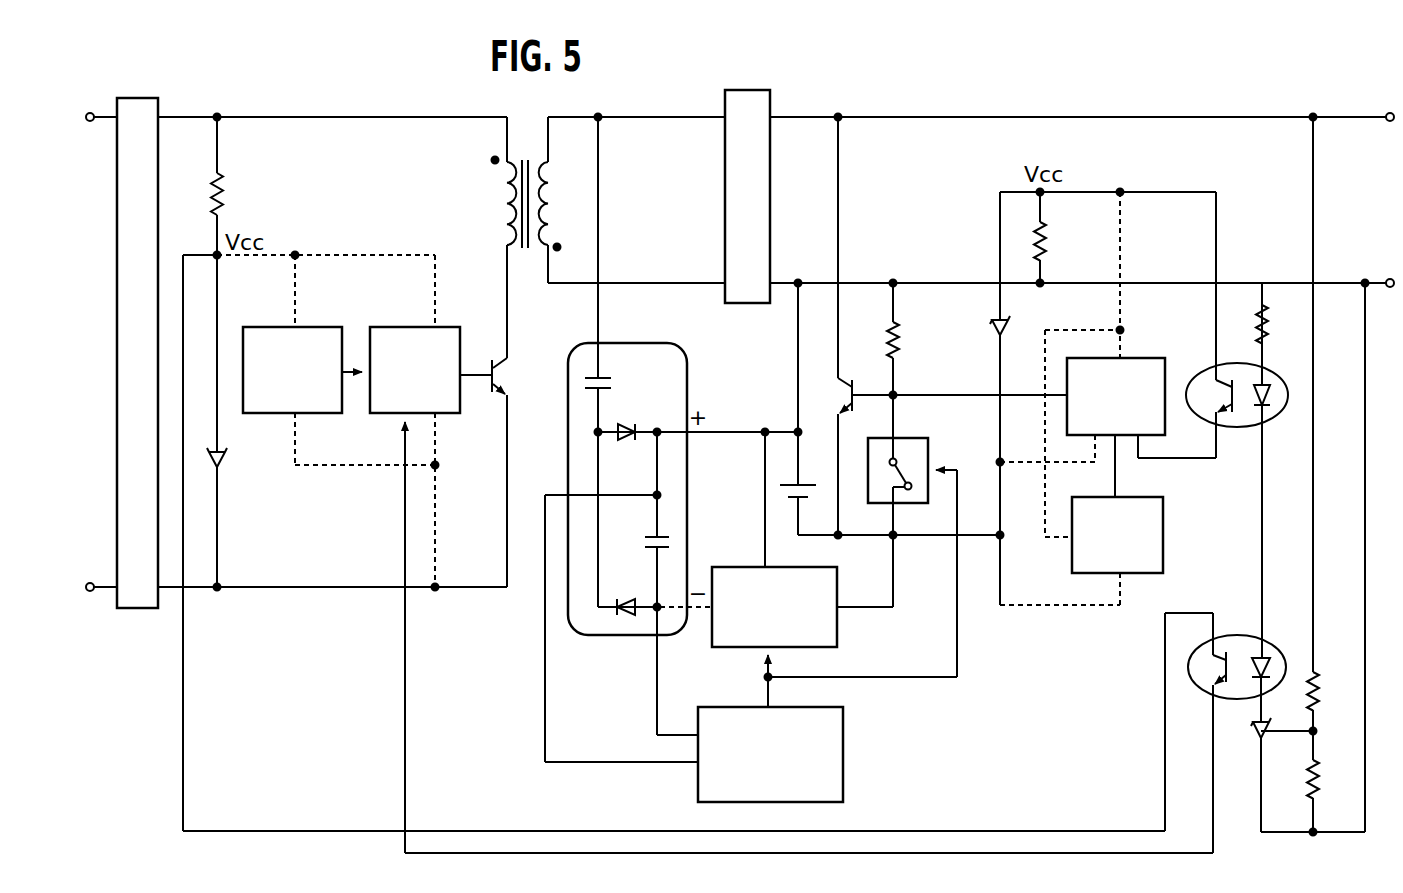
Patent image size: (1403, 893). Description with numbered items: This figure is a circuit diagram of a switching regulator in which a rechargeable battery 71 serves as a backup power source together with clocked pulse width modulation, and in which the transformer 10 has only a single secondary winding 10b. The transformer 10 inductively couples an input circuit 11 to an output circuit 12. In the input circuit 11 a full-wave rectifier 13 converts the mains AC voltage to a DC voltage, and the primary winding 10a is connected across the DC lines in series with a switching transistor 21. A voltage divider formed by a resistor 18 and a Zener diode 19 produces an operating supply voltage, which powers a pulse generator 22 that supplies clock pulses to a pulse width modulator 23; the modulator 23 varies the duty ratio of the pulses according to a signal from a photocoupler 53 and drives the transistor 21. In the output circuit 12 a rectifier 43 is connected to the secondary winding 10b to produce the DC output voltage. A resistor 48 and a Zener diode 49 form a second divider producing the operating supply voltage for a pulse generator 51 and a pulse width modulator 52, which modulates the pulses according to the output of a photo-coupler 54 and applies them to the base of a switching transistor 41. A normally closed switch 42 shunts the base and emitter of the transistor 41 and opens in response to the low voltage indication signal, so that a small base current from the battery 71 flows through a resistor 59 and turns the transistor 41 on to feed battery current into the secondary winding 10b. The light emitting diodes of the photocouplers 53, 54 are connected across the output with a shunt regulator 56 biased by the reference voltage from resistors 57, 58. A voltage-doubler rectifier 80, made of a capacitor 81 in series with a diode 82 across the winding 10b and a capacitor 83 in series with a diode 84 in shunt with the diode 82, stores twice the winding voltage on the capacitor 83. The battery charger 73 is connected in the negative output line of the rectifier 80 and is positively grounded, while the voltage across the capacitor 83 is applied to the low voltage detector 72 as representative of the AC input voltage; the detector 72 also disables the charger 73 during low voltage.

The transformer 10 is at (527, 197).
The primary winding 10a is at (504, 218).
The secondary winding 10b is at (546, 203).
The input circuit 11 is at (355, 102).
The output circuit 12 is at (705, 102).
The full-wave rectifier 13 is at (137, 98).
The resistor 18 is at (222, 193).
The Zener diode 19 is at (225, 456).
The switching transistor 21 is at (498, 391).
The pulse generator 22 is at (267, 335).
The pulse width modulator 23 is at (400, 335).
The switching transistor 41 is at (853, 379).
The normally closed switch 42 is at (929, 450).
The rectifier 43 is at (748, 90).
The resistor 48 is at (1044, 249).
The Zener diode 49 is at (1009, 322).
The pulse generator 51 is at (1135, 497).
The pulse width modulator 52 is at (1143, 358).
The photocoupler 53 is at (1245, 635).
The photo-coupler 54 is at (1238, 430).
The shunt regulator 56 is at (1255, 734).
The resistor 57 is at (1318, 686).
The resistor 58 is at (1318, 780).
The resistor 59 is at (899, 348).
The rechargeable battery 71 is at (803, 481).
The low voltage detector 72 is at (843, 738).
The battery charger 73 is at (733, 565).
The rectifier 80 is at (666, 376).
The capacitor 81 is at (606, 384).
The diode 82 is at (633, 427).
The capacitor 83 is at (642, 540).
The diode 84 is at (626, 599).